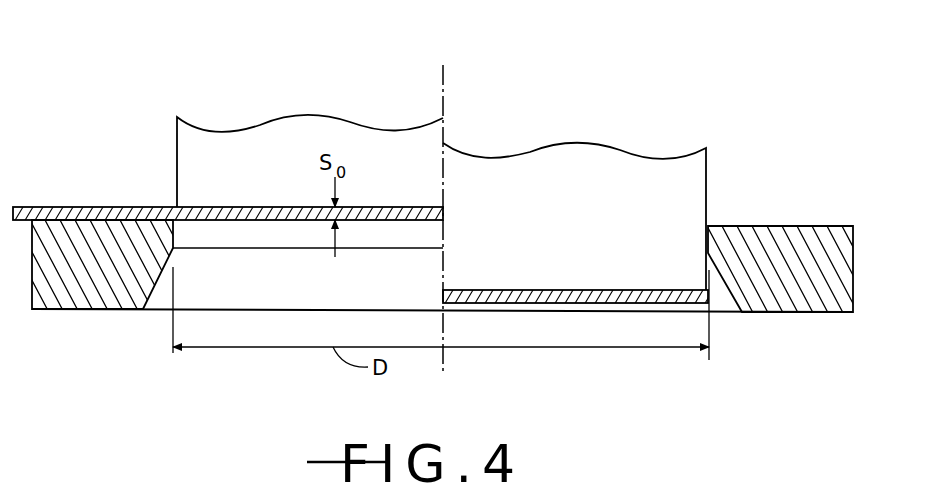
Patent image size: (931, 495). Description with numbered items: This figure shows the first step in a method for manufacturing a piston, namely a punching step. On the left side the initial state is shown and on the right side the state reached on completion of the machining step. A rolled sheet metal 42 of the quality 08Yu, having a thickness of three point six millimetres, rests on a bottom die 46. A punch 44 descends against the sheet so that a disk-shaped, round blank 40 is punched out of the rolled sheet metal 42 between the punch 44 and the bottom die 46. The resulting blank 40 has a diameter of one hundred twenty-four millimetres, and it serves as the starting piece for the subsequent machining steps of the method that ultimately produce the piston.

The blank 40 is at (605, 290).
The rolled sheet metal 42 is at (133, 207).
The punch 44 is at (695, 202).
The bottom die 46 is at (757, 290).